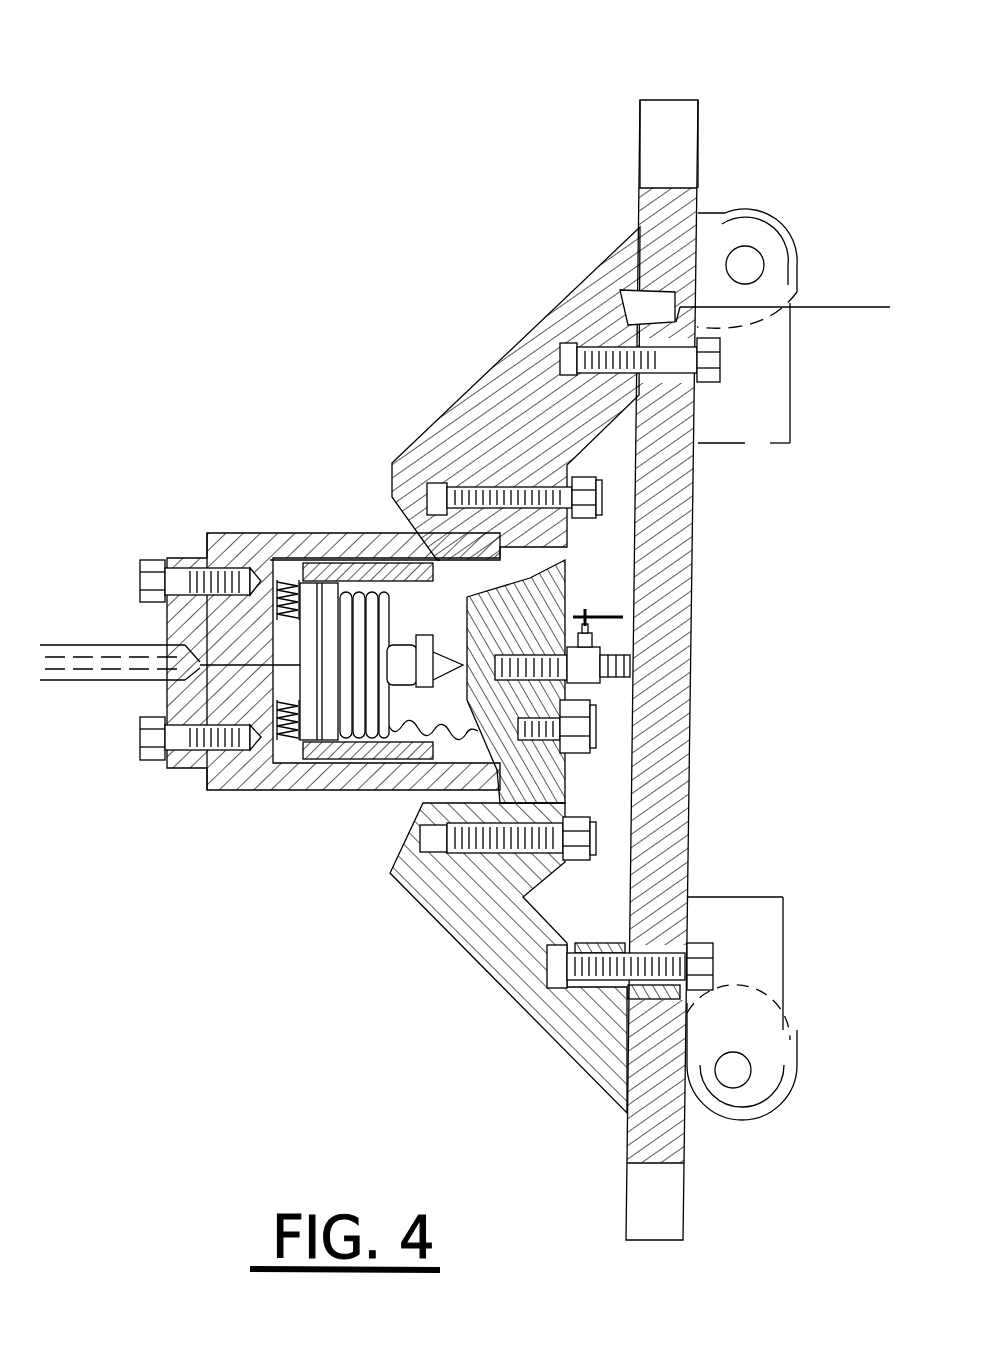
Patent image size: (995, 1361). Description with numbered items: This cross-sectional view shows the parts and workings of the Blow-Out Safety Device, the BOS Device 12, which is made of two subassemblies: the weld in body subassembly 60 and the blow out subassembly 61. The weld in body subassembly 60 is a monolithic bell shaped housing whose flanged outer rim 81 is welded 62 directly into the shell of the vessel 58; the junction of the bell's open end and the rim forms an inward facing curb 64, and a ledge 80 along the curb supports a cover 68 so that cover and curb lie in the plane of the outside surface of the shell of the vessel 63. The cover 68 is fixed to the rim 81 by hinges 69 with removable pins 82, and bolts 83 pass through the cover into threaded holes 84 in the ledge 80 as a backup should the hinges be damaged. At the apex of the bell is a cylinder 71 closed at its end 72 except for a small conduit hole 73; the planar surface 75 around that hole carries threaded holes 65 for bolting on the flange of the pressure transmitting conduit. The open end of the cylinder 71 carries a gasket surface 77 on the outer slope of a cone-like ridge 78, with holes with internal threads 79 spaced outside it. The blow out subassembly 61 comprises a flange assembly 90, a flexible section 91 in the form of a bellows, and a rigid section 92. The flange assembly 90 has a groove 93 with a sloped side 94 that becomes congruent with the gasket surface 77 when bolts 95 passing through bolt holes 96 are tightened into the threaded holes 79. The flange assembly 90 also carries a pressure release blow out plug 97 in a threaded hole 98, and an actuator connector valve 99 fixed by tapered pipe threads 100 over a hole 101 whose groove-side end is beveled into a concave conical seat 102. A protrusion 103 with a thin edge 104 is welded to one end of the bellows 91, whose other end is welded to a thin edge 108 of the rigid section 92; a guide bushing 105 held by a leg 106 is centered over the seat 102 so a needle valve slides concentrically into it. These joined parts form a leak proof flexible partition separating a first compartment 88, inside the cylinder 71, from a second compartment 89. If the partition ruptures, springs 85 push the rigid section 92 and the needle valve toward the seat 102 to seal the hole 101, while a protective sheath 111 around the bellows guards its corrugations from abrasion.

The BOS Device 12 is at (474, 272).
The shell of the vessel 58 is at (890, 24).
The weld in body subassembly 60 is at (440, 420).
The blow out subassembly 61 is at (650, 601).
The weld 62 is at (698, 185).
The outside surface of the shell of the vessel 63 is at (890, 70).
The curb 64 is at (783, 302).
The threaded holes 65 is at (136, 524).
The cover 68 is at (698, 210).
The hinges 69 is at (783, 1030).
The cylinder 71 is at (273, 537).
The closed end 72 is at (117, 441).
The conduit hole 73 is at (108, 580).
The planar surface 75 is at (113, 489).
The gasket surface 77 is at (470, 825).
The ridge 78 is at (430, 800).
The holes with internal threads 79 is at (475, 862).
The ledge 80 is at (620, 290).
The flanged outer rim 81 is at (730, 210).
The pins 82 is at (750, 1077).
The bolts 83 is at (713, 975).
The threaded holes 84 is at (640, 905).
The springs 85 is at (159, 765).
The first compartment 88 is at (108, 760).
The second compartment 89 is at (407, 690).
The flange assembly 90 is at (882, 826).
The flexible section 91 is at (410, 723).
The rigid section 92 is at (184, 720).
The groove 93 is at (876, 875).
The sloped side 94 is at (876, 923).
The bolts 95 is at (520, 852).
The bolt holes 96 is at (556, 857).
The pressure release blow out plug 97 is at (881, 778).
The hole 98 is at (881, 731).
The actuator connector valve 99 is at (604, 643).
The tapered pipe threads 100 is at (550, 623).
The hole 101 is at (888, 543).
The concave conical seat 102 is at (888, 497).
The protrusion 103 is at (888, 448).
The thin edge 104 is at (888, 400).
The guide bushing 105 is at (327, 395).
The leg 106 is at (327, 346).
The thin edge 108 is at (320, 490).
The protective sheath 111 is at (323, 442).